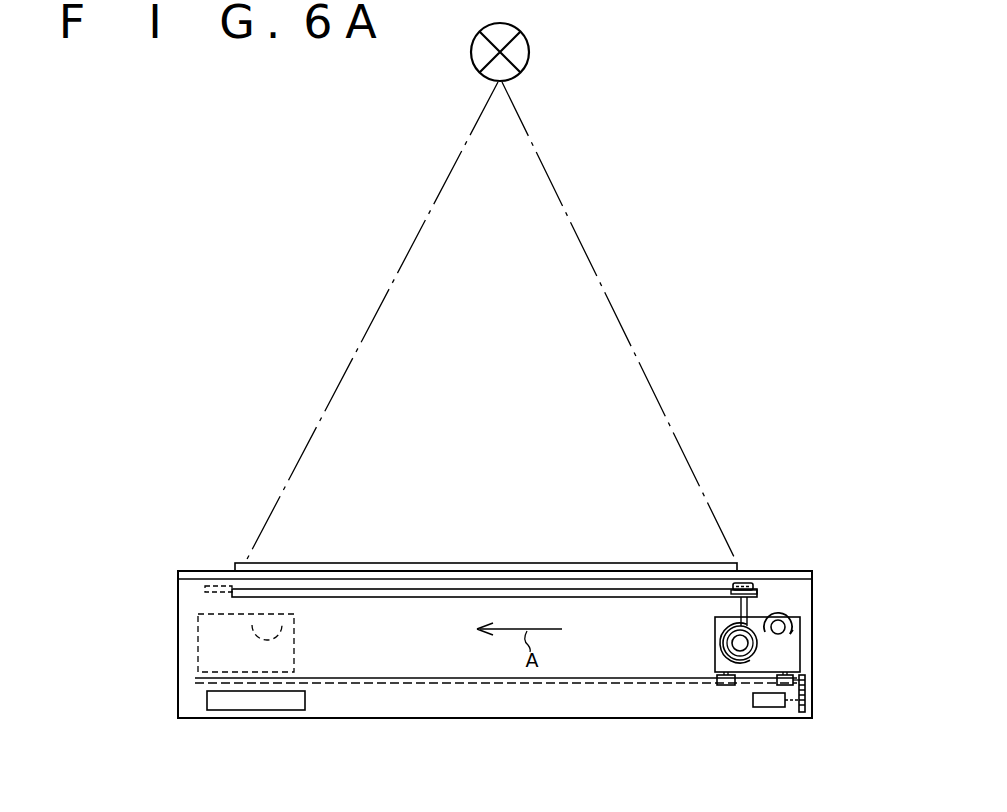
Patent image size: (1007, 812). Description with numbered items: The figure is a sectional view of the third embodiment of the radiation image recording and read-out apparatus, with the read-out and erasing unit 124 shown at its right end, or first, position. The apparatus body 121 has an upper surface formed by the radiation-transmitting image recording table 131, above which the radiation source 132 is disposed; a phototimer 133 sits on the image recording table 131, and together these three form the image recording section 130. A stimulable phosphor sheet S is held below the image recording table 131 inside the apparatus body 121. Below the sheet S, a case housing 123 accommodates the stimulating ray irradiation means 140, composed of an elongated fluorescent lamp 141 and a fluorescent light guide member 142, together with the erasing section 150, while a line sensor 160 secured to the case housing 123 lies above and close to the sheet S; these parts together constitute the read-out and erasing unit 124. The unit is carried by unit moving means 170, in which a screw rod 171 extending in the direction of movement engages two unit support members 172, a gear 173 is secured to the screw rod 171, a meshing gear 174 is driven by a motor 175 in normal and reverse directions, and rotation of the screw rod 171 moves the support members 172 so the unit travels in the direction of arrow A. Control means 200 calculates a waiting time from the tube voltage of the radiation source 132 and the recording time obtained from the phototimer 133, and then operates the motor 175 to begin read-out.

The radiation source 132 is at (533, 62).
The image recording section 130 is at (596, 340).
The image recording table 131 is at (792, 570).
The phototimer 133 is at (405, 567).
The stimulable phosphor sheet S is at (758, 592).
The line sensor 160 is at (748, 578).
The apparatus body 121 is at (823, 613).
The read-out and erasing unit 124 is at (765, 641).
The case housing 123 is at (800, 665).
The stimulating ray irradiation means 140 is at (765, 641).
The fluorescent lamp 141 is at (740, 645).
The fluorescent light guide member 142 is at (758, 647).
The erasing section 150 is at (793, 634).
The unit moving means 170 is at (545, 693).
The screw rod 171 is at (643, 685).
The unit support members 172 is at (779, 686).
The gear 173 is at (806, 685).
The gear 174 is at (806, 707).
The motor 175 is at (767, 703).
The control means 200 is at (270, 705).